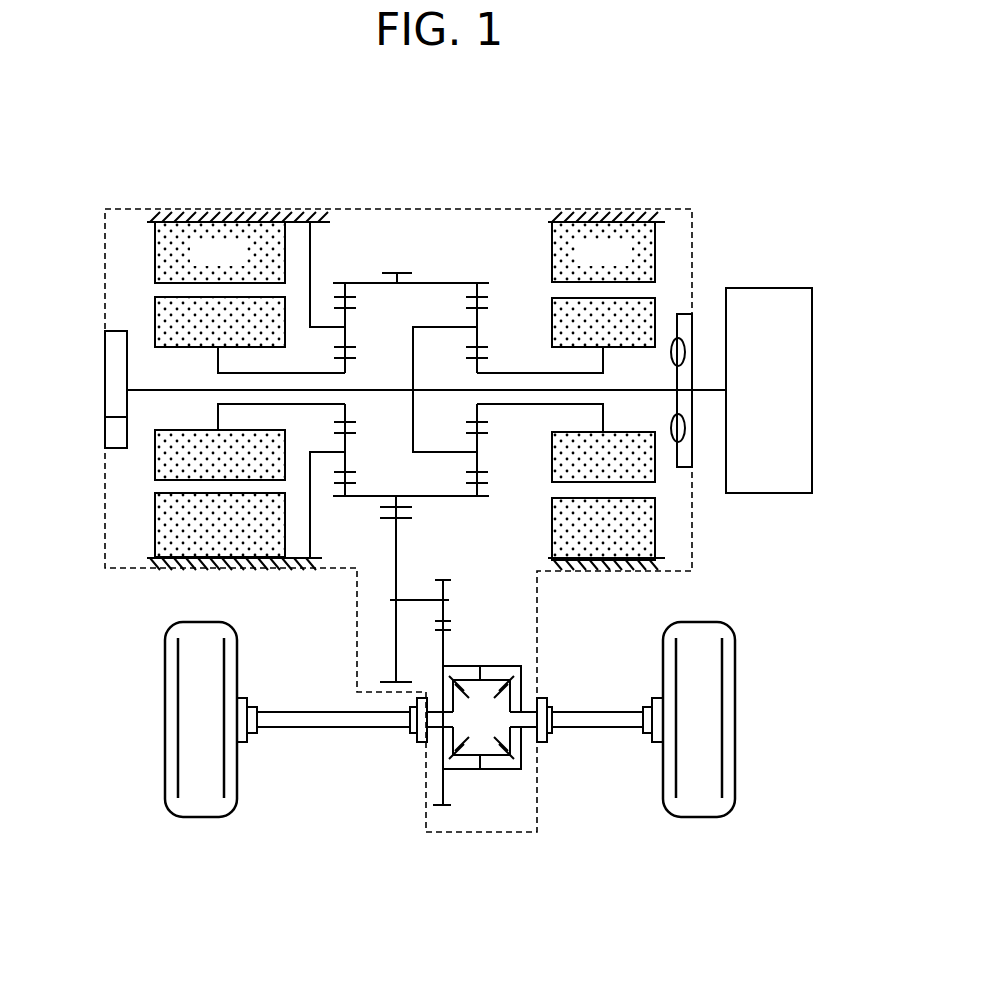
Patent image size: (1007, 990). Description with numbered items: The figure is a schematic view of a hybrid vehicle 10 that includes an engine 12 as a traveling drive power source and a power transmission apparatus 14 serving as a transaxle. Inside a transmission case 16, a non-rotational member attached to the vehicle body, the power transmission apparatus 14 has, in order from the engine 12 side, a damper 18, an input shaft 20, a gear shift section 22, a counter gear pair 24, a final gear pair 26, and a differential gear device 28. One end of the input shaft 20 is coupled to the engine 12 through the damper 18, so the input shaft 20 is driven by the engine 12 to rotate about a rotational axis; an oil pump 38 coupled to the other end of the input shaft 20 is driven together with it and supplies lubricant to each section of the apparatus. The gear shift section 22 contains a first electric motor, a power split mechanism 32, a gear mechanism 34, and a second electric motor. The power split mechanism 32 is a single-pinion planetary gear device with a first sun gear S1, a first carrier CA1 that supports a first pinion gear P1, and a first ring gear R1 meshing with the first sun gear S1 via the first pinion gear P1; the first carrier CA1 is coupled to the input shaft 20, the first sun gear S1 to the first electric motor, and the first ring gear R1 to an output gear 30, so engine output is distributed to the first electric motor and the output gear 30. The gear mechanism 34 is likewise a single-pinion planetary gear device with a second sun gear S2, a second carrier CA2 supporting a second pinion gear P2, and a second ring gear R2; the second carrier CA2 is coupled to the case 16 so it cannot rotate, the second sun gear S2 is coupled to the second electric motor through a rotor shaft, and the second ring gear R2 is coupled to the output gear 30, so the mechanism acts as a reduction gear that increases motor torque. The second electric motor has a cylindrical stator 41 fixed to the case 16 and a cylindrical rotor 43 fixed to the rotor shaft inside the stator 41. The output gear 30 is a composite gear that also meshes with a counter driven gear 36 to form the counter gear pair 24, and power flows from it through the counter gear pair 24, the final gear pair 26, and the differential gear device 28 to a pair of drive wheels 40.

The hybrid vehicle 10 is at (706, 128).
The engine 12 is at (762, 493).
The power transmission apparatus 14 is at (412, 852).
The transmission case 16 is at (468, 208).
The damper 18 is at (683, 468).
The input shaft 20 is at (622, 390).
The gear shift section 22 is at (413, 190).
The counter gear pair 24 is at (370, 514).
The final gear pair 26 is at (463, 625).
The differential gear device 28 is at (484, 783).
The output gear 30 is at (405, 272).
The power split mechanism 32 is at (478, 272).
The gear mechanism 34 is at (346, 272).
The counter driven gear 36 is at (405, 518).
The oil pump 38 is at (116, 338).
The drive wheels 40 is at (202, 810).
The stator 41 is at (158, 252).
The rotor 43 is at (162, 333).
The first ring gear R1 is at (490, 297).
The first pinion gear P1 is at (486, 310).
The first sun gear S1 is at (486, 362).
The first carrier CA1 is at (453, 330).
The second ring gear R2 is at (350, 294).
The second pinion gear P2 is at (356, 347).
The second sun gear S2 is at (353, 360).
The second carrier CA2 is at (340, 330).